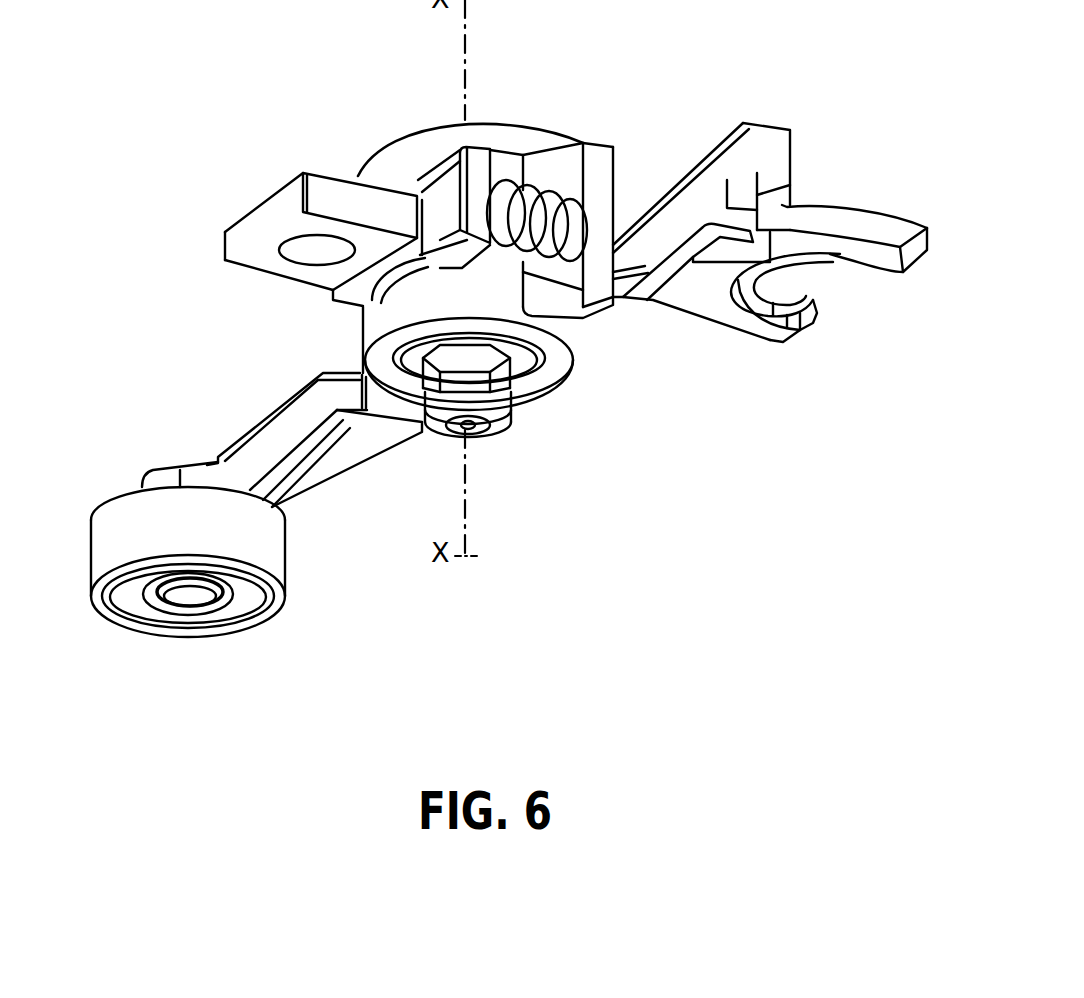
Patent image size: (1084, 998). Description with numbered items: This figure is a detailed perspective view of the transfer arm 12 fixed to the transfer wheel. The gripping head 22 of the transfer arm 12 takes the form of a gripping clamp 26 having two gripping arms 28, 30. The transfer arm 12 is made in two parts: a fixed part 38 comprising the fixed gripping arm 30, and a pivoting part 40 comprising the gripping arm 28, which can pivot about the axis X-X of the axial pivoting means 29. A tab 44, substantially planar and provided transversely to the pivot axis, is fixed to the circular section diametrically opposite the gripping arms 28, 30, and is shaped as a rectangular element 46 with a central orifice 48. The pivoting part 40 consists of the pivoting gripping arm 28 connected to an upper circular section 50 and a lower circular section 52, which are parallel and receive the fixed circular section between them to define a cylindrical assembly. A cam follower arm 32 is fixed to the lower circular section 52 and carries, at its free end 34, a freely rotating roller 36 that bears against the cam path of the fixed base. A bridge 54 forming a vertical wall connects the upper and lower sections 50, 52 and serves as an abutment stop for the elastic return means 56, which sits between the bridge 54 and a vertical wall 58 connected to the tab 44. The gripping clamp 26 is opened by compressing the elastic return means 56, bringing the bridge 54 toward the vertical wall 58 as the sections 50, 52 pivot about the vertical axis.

The transfer arm 12 is at (512, 121).
The gripping head 22 is at (783, 332).
The gripping clamp 26 is at (628, 302).
The gripping arm 28 is at (907, 250).
The axial pivoting means 29 is at (490, 438).
The gripping arm 30 is at (808, 322).
The cam follower arm 32 is at (330, 453).
The free end 34 is at (160, 482).
The roller 36 is at (110, 593).
The fixed part 38 is at (718, 305).
The pivoting part 40 is at (813, 250).
The tab 44 is at (275, 262).
The rectangular element 46 is at (335, 195).
The central orifice 48 is at (317, 255).
The upper circular section 50 is at (420, 150).
The lower circular section 52 is at (483, 300).
The bridge 54 is at (600, 210).
The elastic return means 56 is at (543, 190).
The vertical wall 58 is at (480, 168).